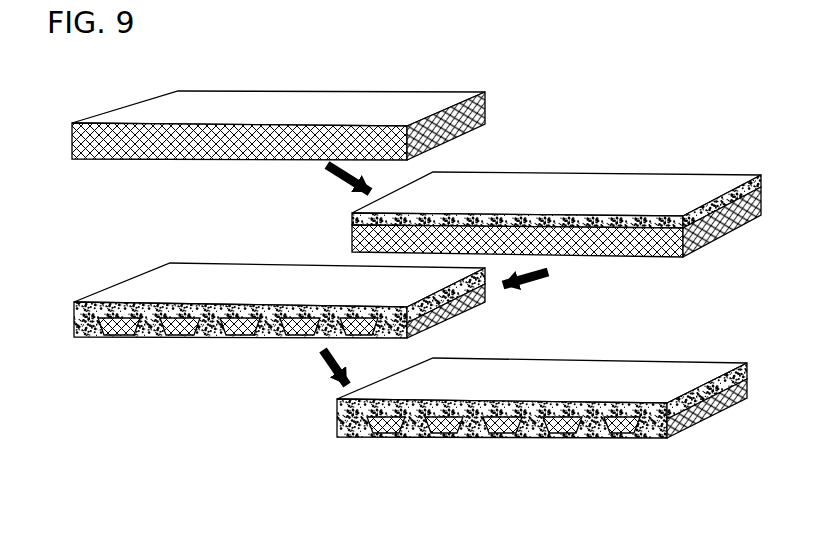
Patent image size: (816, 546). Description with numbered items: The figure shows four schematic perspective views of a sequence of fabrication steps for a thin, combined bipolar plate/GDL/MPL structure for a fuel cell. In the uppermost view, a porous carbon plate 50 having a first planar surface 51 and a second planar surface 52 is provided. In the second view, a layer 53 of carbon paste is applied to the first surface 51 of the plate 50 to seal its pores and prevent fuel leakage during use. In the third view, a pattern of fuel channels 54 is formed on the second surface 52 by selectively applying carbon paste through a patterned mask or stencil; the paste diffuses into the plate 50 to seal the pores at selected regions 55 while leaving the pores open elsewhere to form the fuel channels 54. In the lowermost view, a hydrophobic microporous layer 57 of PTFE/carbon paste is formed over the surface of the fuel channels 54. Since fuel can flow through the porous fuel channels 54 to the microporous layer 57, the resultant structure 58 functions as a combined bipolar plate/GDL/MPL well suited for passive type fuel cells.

The porous carbon plate 50 is at (321, 134).
The first planar surface 51 is at (246, 110).
The second planar surface 52 is at (198, 163).
The layer of carbon paste 53 is at (570, 188).
The fuel channels 54 is at (290, 347).
The selected regions 55 is at (148, 345).
The hydrophobic microporous layer 57 is at (616, 443).
The resultant structure 58 is at (542, 413).